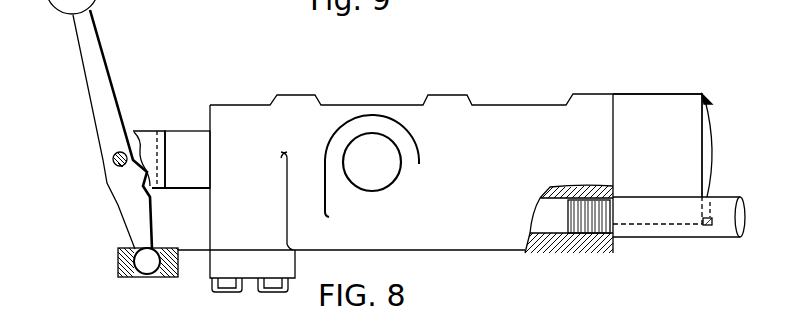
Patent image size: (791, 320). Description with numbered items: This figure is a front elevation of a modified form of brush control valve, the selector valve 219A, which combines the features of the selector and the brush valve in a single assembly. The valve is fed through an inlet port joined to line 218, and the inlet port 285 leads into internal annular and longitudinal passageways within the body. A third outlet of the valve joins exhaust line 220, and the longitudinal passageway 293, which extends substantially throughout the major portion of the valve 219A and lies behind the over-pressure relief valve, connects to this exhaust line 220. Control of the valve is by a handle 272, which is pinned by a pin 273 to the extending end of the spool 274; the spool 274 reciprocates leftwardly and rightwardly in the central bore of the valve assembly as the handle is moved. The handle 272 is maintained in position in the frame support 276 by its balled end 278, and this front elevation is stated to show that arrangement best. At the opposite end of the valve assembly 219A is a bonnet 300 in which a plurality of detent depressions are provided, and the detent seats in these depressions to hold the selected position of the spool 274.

The line 218 is at (382, 189).
The selector valve 219A is at (656, 90).
The exhaust line 220 is at (662, 240).
The handle 272 is at (112, 0).
The pin 273 is at (122, 148).
The spool 274 is at (188, 137).
The frame support 276 is at (193, 270).
The balled end 278 is at (147, 274).
The inlet port 285 is at (382, 163).
The longitudinal passageway 293 is at (552, 228).
The bonnet 300 is at (715, 133).